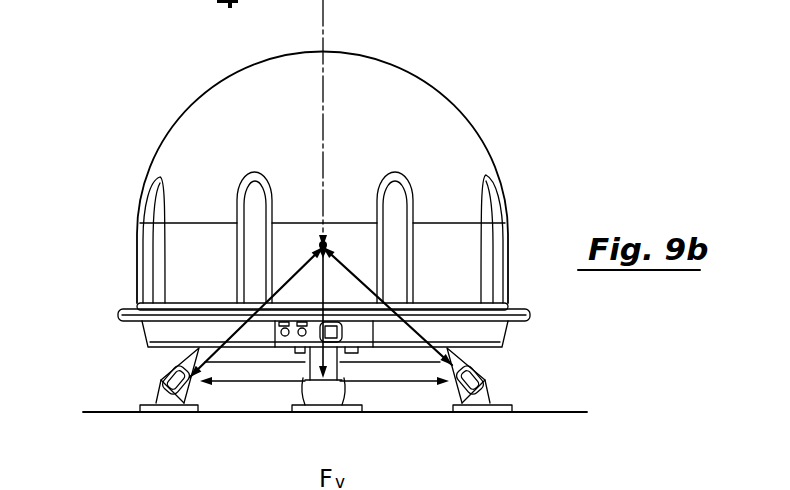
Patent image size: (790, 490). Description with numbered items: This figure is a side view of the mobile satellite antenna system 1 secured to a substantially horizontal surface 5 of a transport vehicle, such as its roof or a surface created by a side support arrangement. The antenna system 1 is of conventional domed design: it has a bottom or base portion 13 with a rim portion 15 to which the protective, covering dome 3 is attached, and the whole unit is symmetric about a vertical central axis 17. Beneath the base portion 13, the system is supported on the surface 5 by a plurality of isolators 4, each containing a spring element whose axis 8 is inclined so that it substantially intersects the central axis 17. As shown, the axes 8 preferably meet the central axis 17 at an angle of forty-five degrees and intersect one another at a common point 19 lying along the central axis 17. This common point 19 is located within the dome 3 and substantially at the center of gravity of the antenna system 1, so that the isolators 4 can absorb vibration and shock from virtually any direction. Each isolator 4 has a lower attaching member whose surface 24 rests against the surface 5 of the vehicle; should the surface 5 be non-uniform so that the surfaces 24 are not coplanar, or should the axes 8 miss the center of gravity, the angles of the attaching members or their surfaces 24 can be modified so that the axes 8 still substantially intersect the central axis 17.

The mobile satellite antenna system 1 is at (506, 96).
The protective covering dome 3 is at (436, 88).
The isolator 4 is at (140, 362).
The roof or substantially horizontal surface 5 is at (92, 412).
The axis of the spring element 8 is at (430, 256).
The bottom or base portion 13 is at (457, 332).
The rim portion 15 is at (122, 307).
The central axis 17 is at (325, 36).
The common point 19 is at (321, 236).
The surface of the lower attaching member 24 is at (153, 403).